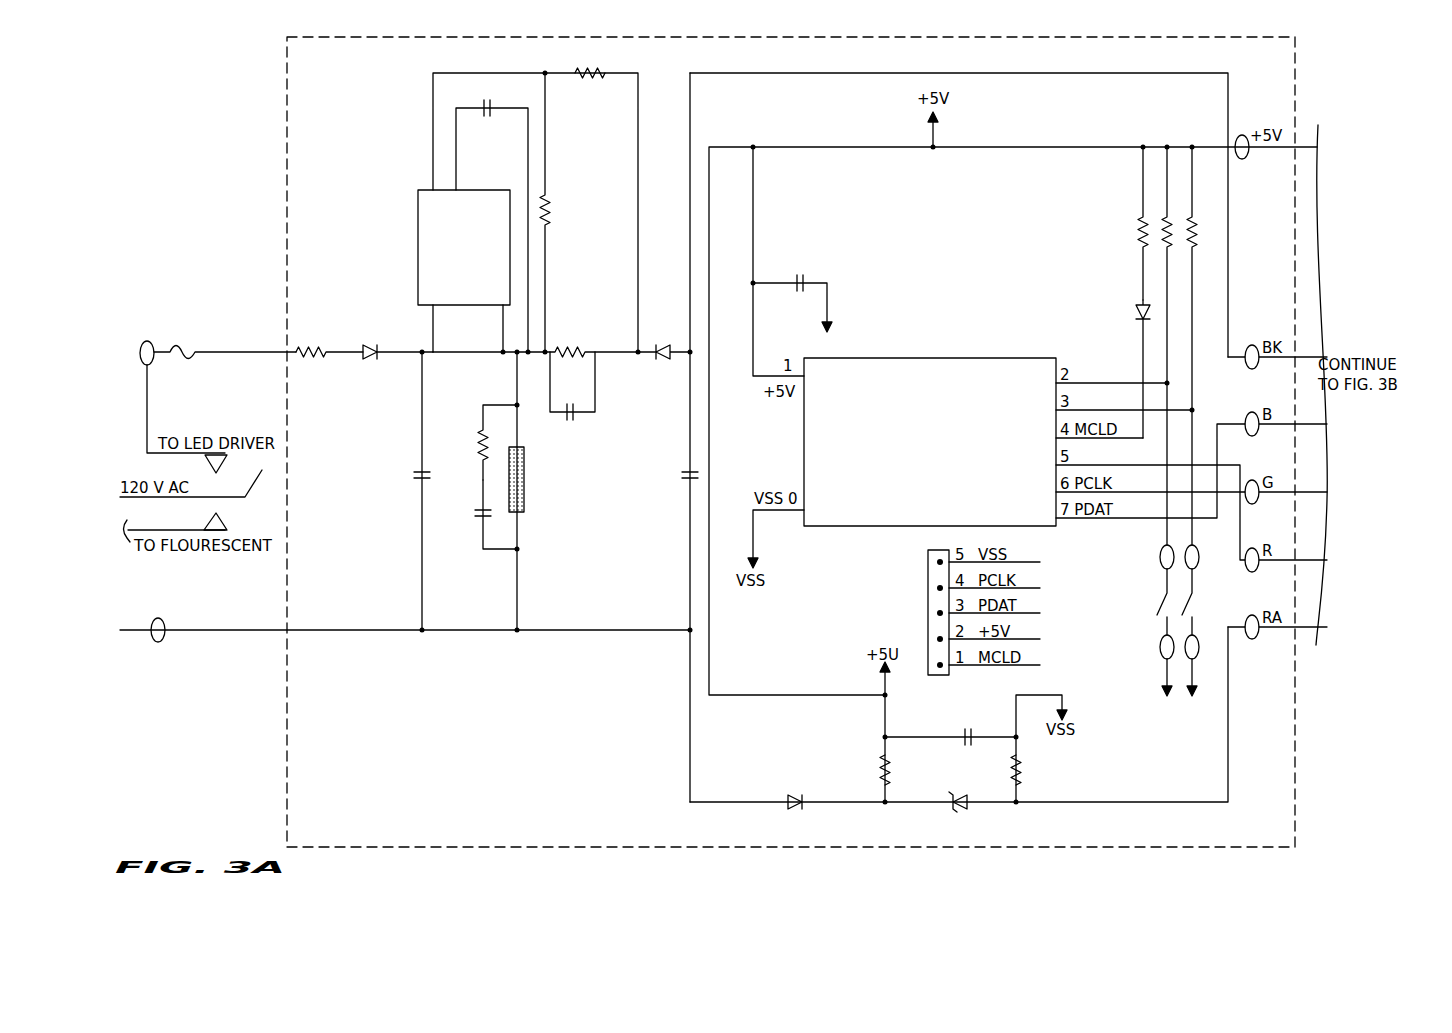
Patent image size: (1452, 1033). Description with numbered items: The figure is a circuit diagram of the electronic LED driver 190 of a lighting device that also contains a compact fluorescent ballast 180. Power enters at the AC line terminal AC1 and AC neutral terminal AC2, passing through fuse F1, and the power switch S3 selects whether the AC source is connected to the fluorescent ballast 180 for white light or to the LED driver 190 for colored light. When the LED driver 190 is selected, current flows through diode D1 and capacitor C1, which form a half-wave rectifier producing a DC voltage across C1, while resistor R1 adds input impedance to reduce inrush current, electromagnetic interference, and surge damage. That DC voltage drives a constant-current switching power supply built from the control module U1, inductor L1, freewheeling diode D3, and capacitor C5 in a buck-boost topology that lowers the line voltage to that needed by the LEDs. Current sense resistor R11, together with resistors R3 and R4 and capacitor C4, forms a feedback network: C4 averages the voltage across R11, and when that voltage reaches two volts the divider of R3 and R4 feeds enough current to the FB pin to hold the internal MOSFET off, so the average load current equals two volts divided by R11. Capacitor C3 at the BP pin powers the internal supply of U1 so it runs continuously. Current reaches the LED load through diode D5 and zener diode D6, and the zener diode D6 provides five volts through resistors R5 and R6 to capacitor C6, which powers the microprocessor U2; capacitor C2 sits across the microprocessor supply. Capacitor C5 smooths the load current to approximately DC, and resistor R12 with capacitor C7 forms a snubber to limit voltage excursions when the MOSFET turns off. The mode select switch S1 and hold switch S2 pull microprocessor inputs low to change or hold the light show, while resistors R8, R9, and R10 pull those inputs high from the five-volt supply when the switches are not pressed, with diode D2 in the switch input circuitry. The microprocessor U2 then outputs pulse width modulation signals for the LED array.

The LED driver 190 is at (287, 134).
The compact fluorescent ballast 180 is at (200, 566).
The control module U1 is at (464, 247).
The microprocessor U2 is at (930, 442).
The inductor L1 is at (539, 491).
The capacitor C1 is at (413, 491).
The capacitor C2 is at (796, 304).
The capacitor C3 is at (489, 110).
The capacitor C4 is at (587, 402).
The capacitor C5 is at (683, 437).
The capacitor C6 is at (950, 742).
The capacitor C7 is at (486, 521).
The resistor R1 is at (326, 351).
The resistor R3 is at (589, 75).
The resistor R4 is at (561, 212).
The resistor R5 is at (899, 770).
The resistor R6 is at (1029, 770).
The resistor R8 is at (1150, 223).
The resistor R9 is at (1174, 346).
The resistor R10 is at (1202, 346).
The current sense resistor R11 is at (544, 351).
The resistor R12 is at (482, 428).
The diode D1 is at (395, 341).
The diode D2 is at (1134, 362).
The freewheeling diode D3 is at (669, 341).
The diode D5 is at (808, 794).
The zener diode D6 is at (964, 802).
The mode select switch S1 is at (1200, 631).
The hold switch S2 is at (1155, 631).
The power switch S3 is at (199, 485).
The fuse F1 is at (225, 345).
The AC line terminal AC1 is at (151, 349).
The AC neutral terminal AC2 is at (164, 627).